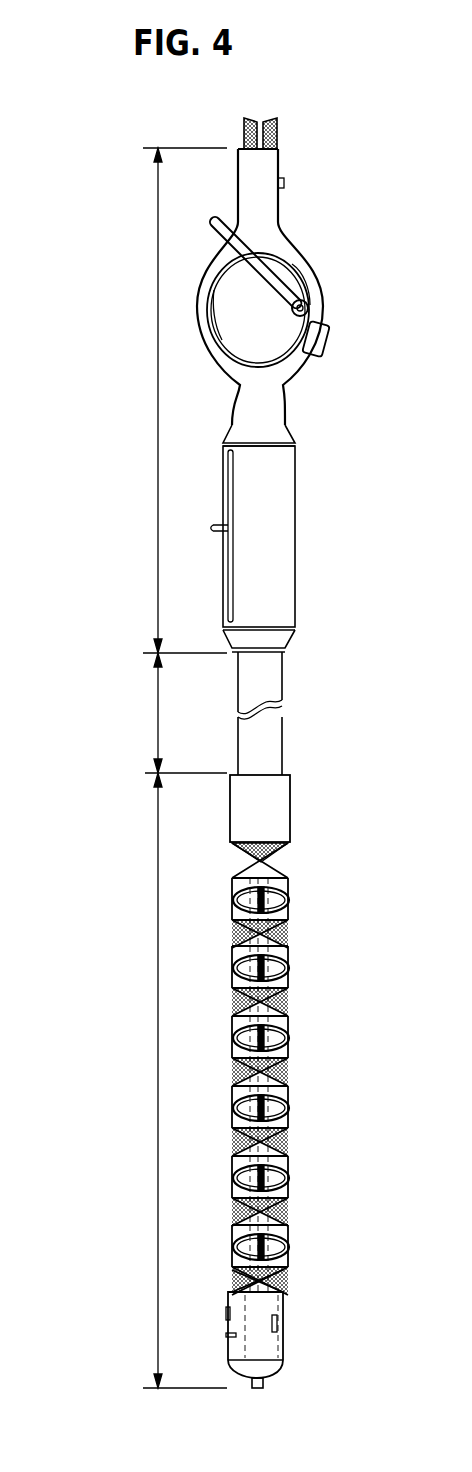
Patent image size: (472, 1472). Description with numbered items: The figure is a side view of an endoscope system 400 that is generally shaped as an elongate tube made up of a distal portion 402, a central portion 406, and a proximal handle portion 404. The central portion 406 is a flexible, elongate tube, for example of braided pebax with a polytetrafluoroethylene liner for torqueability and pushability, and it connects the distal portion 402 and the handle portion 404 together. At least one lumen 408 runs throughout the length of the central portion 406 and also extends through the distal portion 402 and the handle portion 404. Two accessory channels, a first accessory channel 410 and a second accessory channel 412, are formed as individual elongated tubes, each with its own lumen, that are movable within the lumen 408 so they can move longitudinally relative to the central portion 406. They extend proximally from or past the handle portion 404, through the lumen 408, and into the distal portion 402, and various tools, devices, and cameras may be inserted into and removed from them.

The endoscope system 400 is at (100, 317).
The distal portion 402 is at (158, 993).
The handle portion 404 is at (158, 452).
The central portion 406 is at (158, 735).
The lumen 408 is at (272, 683).
The first accessory channel 410 is at (243, 134).
The second accessory channel 412 is at (277, 139).